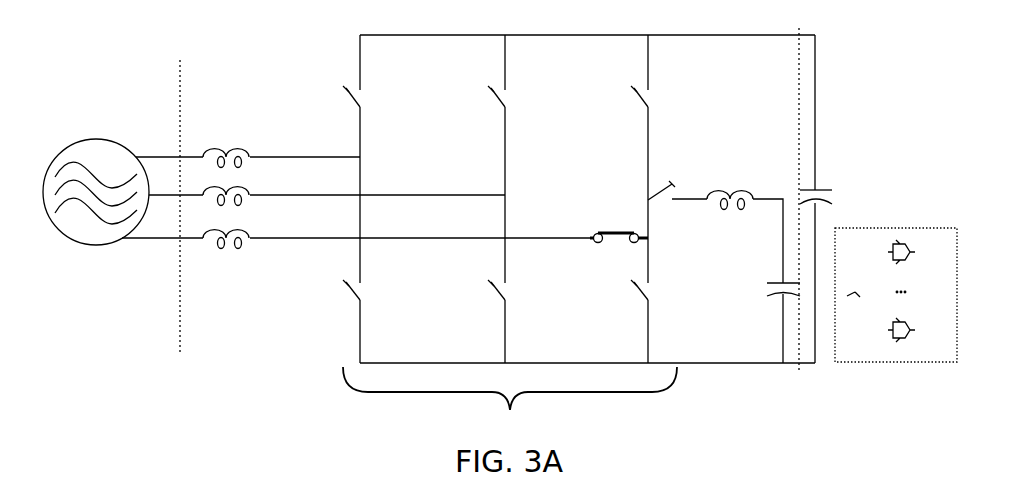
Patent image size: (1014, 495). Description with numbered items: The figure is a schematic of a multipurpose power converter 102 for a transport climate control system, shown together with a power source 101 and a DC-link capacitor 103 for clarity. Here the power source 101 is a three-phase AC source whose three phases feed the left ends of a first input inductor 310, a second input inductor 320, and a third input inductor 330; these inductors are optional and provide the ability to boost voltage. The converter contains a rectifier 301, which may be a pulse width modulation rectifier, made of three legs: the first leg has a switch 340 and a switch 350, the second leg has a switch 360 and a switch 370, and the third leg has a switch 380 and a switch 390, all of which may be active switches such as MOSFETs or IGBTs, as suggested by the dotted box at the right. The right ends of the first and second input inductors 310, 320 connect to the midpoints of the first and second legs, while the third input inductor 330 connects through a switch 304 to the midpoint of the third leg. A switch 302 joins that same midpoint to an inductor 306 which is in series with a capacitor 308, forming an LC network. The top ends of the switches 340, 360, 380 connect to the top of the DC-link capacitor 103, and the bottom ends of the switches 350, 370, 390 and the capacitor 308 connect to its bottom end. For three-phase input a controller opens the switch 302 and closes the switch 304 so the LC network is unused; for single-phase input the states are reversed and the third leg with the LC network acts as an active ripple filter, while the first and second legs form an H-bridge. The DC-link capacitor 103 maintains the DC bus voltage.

The power source 101 is at (92, 127).
The multipurpose power converter 102 is at (492, 25).
The DC-link capacitor 103 is at (842, 175).
The rectifier 301 is at (510, 401).
The switch 302 is at (676, 178).
The switch 304 is at (620, 222).
The inductor 306 is at (727, 217).
The capacitor 308 is at (760, 291).
The first input inductor 310 is at (228, 142).
The second input inductor 320 is at (254, 186).
The third input inductor 330 is at (222, 258).
The switch 340 is at (343, 78).
The switch 350 is at (345, 325).
The switch 360 is at (522, 135).
The switch 370 is at (520, 328).
The switch 380 is at (682, 83).
The switch 390 is at (668, 325).